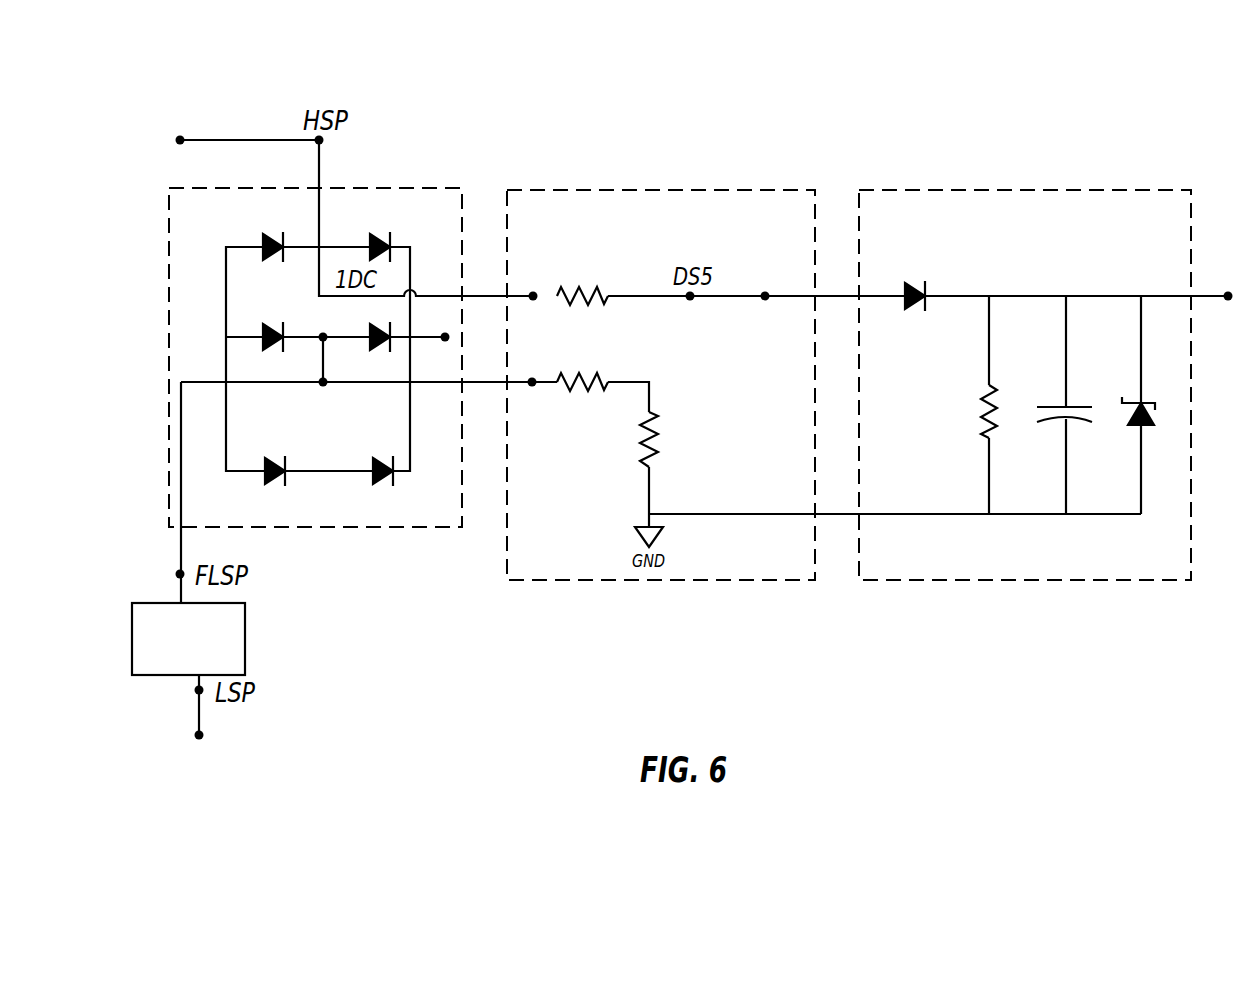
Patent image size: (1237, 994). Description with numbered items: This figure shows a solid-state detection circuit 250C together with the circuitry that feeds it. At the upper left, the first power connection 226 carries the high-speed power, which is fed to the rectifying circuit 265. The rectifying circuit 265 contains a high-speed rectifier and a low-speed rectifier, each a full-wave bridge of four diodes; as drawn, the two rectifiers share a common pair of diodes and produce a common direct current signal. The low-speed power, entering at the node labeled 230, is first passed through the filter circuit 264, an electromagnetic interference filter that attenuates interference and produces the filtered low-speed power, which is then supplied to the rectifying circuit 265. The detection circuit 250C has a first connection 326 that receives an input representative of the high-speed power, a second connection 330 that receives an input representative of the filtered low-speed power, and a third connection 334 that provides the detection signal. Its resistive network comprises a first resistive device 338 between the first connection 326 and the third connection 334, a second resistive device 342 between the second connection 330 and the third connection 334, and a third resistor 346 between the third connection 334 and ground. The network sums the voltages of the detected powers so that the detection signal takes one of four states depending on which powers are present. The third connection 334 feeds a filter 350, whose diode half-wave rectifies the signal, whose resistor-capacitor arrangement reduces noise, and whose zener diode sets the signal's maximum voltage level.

The first power connection 226 is at (180, 140).
The rectifying circuit 265 is at (338, 188).
The solid-state detection circuit 250C is at (688, 190).
The filter 350 is at (1040, 190).
The first connection 326 is at (533, 296).
The third connection 334 is at (765, 296).
The first resistive device 338 is at (580, 300).
The second connection 330 is at (532, 382).
The second resistive device 342 is at (600, 388).
The third resistor 346 is at (658, 430).
The filter circuit 264 is at (245, 640).
The low side power node 230 is at (199, 735).